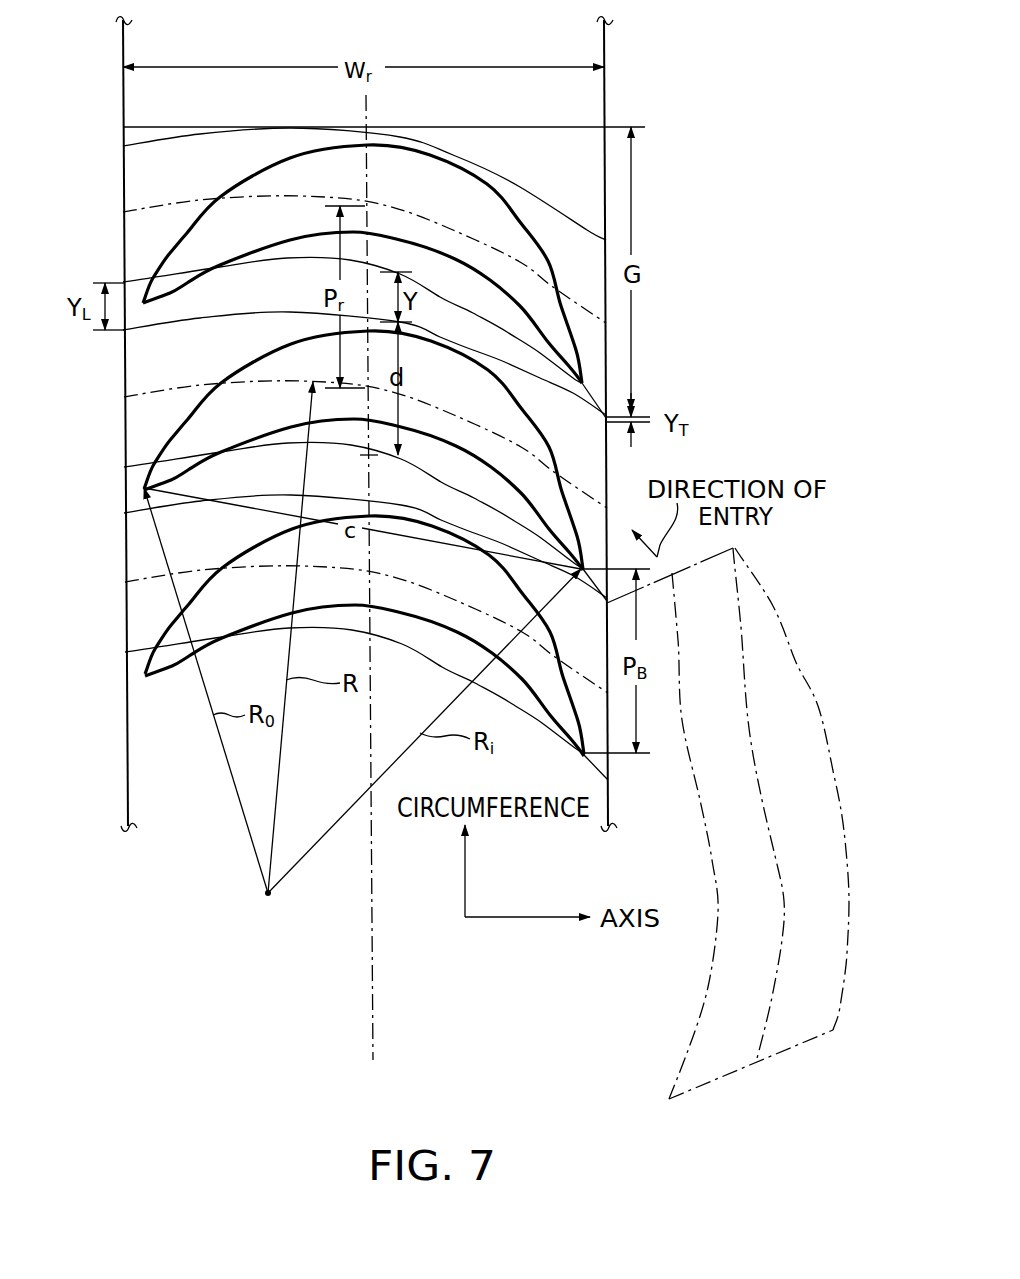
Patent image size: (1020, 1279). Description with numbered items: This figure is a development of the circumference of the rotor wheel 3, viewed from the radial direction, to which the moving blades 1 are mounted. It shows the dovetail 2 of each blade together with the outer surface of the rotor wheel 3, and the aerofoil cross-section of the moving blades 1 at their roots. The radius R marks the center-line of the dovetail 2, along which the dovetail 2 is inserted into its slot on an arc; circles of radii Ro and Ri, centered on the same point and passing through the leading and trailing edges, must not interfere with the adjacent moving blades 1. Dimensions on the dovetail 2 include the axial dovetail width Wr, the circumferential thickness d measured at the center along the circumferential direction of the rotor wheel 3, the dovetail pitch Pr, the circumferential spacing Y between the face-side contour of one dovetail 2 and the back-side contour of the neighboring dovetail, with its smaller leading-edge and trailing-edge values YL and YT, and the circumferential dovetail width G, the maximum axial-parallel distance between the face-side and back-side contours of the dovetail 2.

The moving blade 1 is at (560, 333).
The dovetail 2 is at (570, 240).
The rotor wheel 3 is at (577, 193).